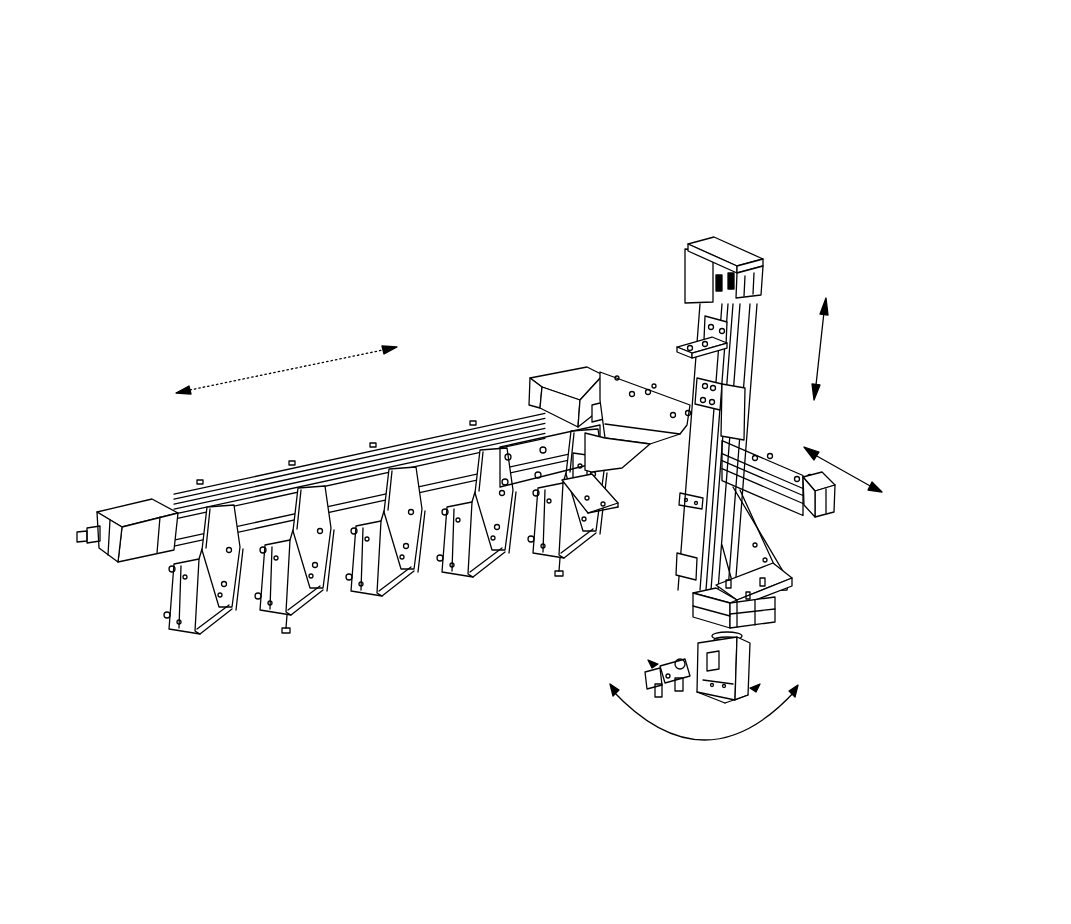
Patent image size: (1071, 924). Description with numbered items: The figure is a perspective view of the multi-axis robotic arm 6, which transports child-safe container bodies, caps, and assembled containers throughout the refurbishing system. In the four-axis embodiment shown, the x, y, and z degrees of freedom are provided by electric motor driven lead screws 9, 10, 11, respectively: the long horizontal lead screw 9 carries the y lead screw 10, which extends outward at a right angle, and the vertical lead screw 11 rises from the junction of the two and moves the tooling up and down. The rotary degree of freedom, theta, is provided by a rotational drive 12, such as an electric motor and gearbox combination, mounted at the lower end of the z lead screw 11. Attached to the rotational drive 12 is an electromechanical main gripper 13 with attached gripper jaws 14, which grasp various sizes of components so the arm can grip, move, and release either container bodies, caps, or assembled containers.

The multi-axis robotic arm 6 is at (385, 188).
The electric motor driven lead screw 9 is at (133, 505).
The electric motor driven lead screw 10 is at (828, 522).
The electric motor driven lead screw 11 is at (728, 240).
The rotational drive 12 is at (786, 620).
The main gripper 13 is at (752, 688).
The gripper jaws 14 is at (655, 667).